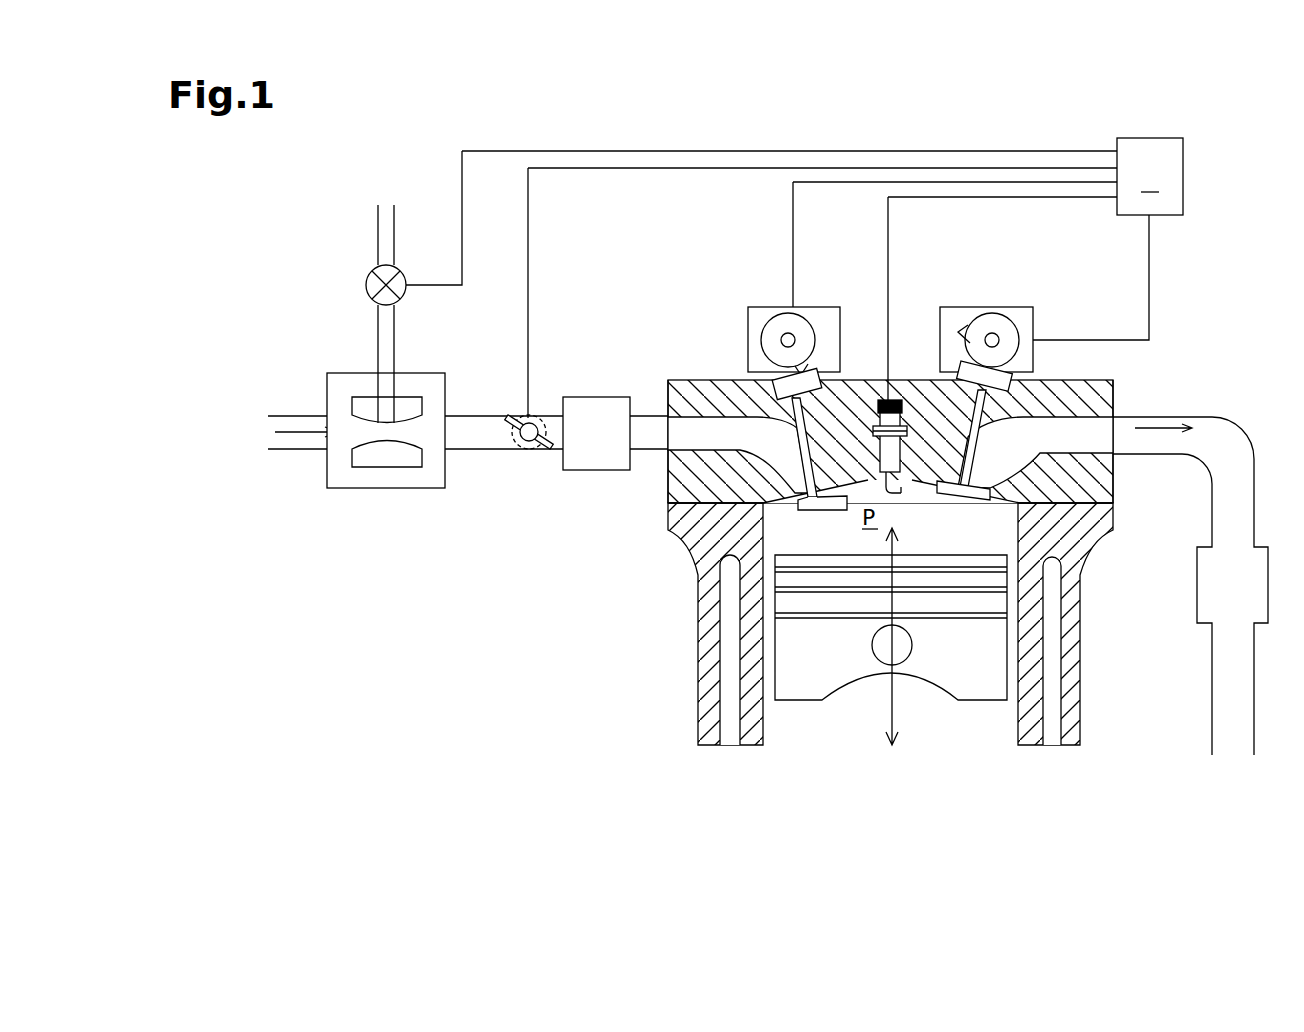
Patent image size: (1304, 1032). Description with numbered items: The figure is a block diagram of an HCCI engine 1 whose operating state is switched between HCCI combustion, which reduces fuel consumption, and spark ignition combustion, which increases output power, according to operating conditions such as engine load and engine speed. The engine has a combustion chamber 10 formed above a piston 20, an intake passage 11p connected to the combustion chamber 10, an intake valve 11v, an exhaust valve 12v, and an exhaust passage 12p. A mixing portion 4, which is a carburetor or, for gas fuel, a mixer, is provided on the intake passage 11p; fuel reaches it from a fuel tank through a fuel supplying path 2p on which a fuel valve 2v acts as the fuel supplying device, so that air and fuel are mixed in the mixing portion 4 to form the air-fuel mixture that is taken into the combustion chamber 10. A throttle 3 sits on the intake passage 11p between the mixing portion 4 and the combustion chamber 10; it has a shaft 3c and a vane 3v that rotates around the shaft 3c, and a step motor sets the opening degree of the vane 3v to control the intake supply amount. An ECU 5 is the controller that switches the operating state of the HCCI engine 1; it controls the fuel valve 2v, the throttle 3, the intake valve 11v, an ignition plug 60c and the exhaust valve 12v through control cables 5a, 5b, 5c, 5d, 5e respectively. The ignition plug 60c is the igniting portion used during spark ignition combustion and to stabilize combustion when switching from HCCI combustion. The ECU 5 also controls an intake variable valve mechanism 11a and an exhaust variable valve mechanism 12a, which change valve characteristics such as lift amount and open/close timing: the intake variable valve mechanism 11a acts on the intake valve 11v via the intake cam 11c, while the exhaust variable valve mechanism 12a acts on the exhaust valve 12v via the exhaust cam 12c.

The HCCI engine 1 is at (1214, 162).
The ECU 5 is at (1150, 176).
The control cable 5a is at (1040, 151).
The control cable 5b is at (913, 152).
The control cable 5c is at (852, 182).
The control cable 5d is at (972, 197).
The control cable 5e is at (1149, 278).
The fuel supplying path 2p is at (378, 223).
The fuel valve 2v is at (366, 285).
The intake passage 11p is at (288, 416).
The mixing portion 4 is at (345, 488).
The throttle 3 is at (542, 406).
The vane 3v is at (552, 450).
The shaft 3c is at (522, 449).
The combustion chamber 10 is at (776, 538).
The intake variable valve mechanism 11a is at (749, 307).
The intake cam 11c is at (807, 338).
The intake valve 11v is at (828, 508).
The exhaust variable valve mechanism 12a is at (949, 307).
The exhaust cam 12c is at (995, 325).
The exhaust valve 12v is at (961, 490).
The ignition plug 60c is at (903, 480).
The exhaust passage 12p is at (1128, 417).
The piston 20 is at (993, 662).